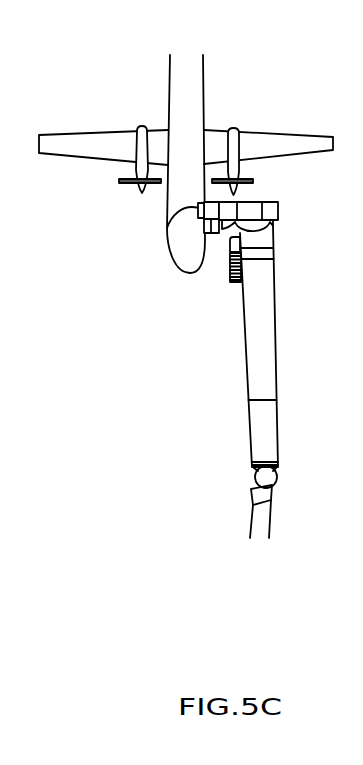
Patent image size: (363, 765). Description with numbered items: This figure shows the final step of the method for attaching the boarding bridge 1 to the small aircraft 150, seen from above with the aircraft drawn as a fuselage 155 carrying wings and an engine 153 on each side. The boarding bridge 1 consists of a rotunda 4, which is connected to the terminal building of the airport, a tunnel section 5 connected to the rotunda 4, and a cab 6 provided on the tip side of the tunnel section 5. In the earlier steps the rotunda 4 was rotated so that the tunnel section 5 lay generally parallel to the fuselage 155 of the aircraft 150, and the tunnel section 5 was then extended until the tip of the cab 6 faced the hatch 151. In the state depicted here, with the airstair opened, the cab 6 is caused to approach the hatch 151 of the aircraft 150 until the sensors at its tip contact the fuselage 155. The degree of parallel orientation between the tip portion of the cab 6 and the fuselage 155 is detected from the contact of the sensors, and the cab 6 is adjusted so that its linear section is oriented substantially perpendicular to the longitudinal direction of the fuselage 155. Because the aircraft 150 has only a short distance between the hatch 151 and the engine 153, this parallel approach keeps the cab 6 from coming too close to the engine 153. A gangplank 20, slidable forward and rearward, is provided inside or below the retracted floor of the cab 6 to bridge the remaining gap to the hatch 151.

The aircraft 150 is at (155, 82).
The fuselage 155 is at (206, 166).
The engine 153 is at (220, 201).
The hatch 151 is at (198, 211).
The gangplank 20 is at (208, 202).
The cab 6 is at (279, 211).
The tunnel section 5 is at (247, 364).
The rotunda 4 is at (255, 478).
The boarding bridge 1 is at (226, 370).